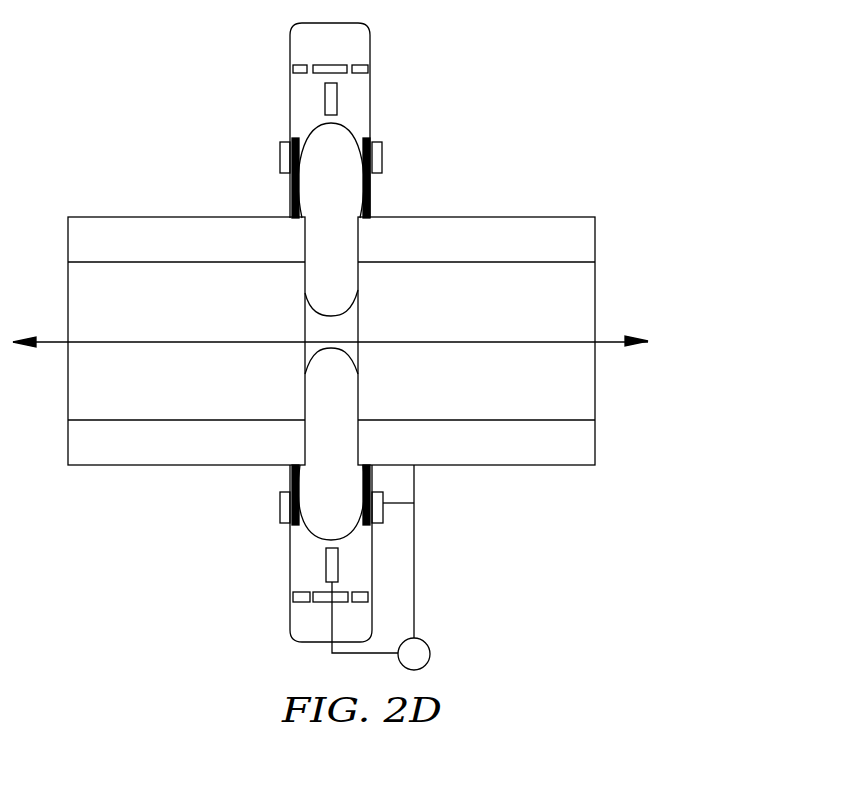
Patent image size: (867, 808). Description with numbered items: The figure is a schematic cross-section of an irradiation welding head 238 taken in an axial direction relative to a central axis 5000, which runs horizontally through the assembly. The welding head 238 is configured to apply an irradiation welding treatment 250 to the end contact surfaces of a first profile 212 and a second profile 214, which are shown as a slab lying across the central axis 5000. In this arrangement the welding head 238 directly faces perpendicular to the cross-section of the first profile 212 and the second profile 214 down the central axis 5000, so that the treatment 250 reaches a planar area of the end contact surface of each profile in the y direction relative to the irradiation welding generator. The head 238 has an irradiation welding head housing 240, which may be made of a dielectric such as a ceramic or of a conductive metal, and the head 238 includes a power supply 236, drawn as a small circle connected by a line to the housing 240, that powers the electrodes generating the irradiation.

The first profile 212 is at (372, 240).
The second profile 214 is at (296, 210).
The power supply 236 is at (423, 652).
The irradiation welding head 238 is at (356, 48).
The irradiation welding head housing 240 is at (370, 105).
The irradiation welding treatment 250 is at (354, 140).
The central axis 5000 is at (616, 336).